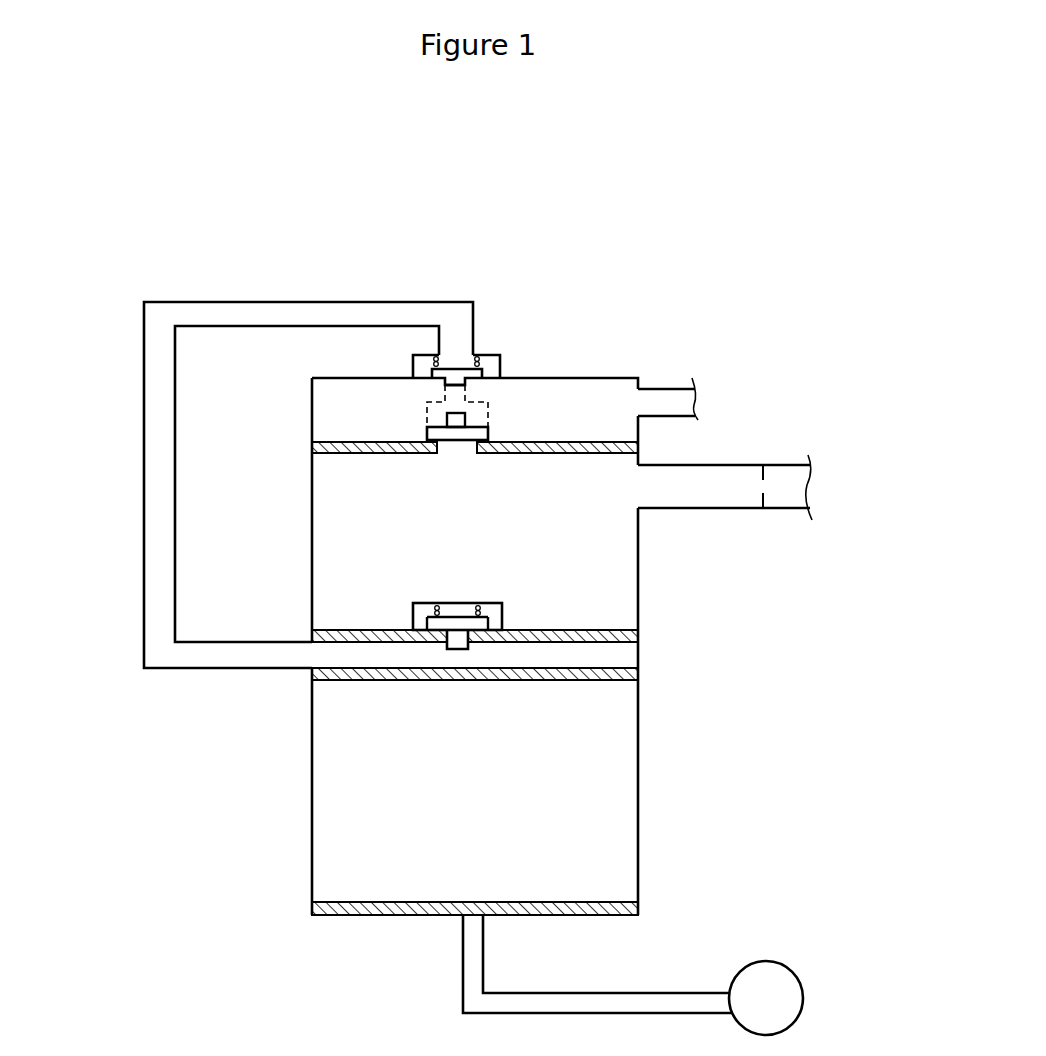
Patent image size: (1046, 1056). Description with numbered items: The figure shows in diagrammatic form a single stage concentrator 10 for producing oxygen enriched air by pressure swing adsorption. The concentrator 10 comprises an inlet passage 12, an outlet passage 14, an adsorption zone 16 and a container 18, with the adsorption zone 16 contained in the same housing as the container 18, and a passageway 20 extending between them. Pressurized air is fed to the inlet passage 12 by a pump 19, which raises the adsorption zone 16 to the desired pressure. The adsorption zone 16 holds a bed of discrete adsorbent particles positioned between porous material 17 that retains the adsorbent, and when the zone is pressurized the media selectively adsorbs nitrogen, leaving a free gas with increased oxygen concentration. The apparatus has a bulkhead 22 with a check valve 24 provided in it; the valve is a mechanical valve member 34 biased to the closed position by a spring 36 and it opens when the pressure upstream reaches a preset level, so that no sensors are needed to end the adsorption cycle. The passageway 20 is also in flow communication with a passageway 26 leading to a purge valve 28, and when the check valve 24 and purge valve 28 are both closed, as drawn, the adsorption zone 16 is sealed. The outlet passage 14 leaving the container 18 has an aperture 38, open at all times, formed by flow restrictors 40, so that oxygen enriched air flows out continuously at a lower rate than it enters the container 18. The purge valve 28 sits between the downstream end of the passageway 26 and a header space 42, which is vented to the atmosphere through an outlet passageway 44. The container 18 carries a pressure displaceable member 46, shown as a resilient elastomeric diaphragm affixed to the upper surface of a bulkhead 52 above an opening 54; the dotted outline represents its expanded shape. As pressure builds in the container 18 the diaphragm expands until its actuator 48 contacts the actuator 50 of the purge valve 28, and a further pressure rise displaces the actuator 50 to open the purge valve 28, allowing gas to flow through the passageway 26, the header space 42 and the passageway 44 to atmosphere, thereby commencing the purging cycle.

The concentrator 10 is at (678, 238).
The inlet passage 12 is at (535, 1003).
The outlet passage 14 is at (785, 492).
The adsorption zone 16 is at (615, 792).
The porous material 17 is at (640, 675).
The container 18 is at (620, 545).
The pump 19 is at (773, 992).
The passageway 20 is at (620, 655).
The bulkhead 22 is at (640, 636).
The check valve 24 is at (502, 603).
The passageway 26 is at (155, 548).
The purge valve 28 is at (500, 360).
The valve member 34 is at (475, 625).
The spring 36 is at (477, 603).
The aperture 38 is at (758, 489).
The flow restrictors 40 is at (767, 478).
The header space 42 is at (493, 398).
The outlet passageway 44 is at (680, 405).
The pressure displaceable member 46 is at (487, 428).
The actuator 48 is at (455, 412).
The actuator 50 is at (448, 391).
The bulkhead 52 is at (638, 445).
The opening 54 is at (458, 452).